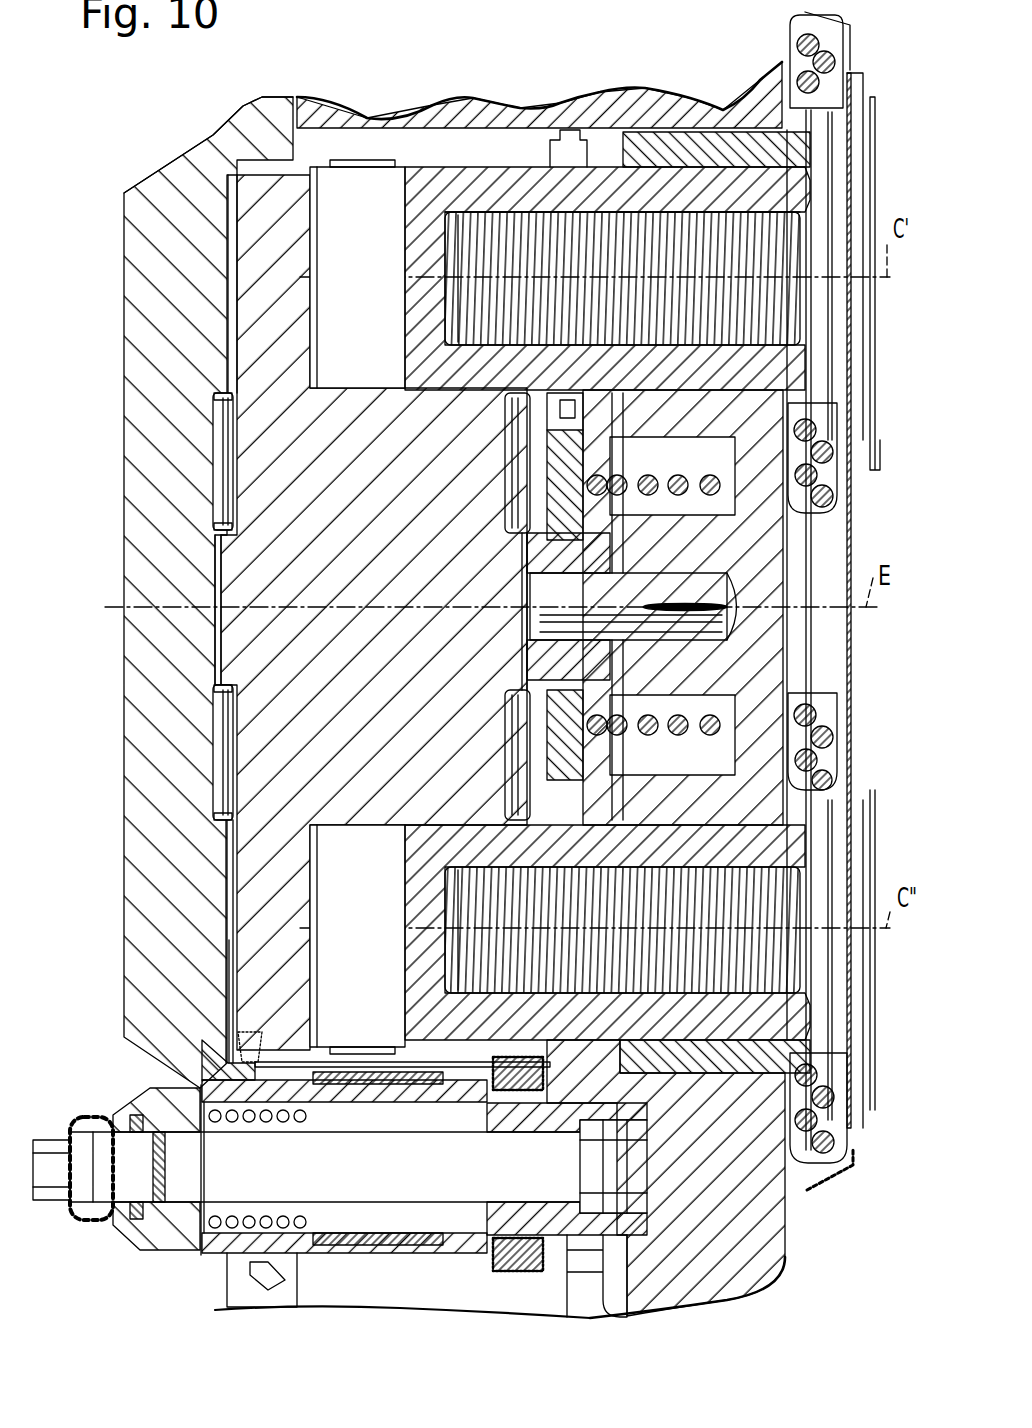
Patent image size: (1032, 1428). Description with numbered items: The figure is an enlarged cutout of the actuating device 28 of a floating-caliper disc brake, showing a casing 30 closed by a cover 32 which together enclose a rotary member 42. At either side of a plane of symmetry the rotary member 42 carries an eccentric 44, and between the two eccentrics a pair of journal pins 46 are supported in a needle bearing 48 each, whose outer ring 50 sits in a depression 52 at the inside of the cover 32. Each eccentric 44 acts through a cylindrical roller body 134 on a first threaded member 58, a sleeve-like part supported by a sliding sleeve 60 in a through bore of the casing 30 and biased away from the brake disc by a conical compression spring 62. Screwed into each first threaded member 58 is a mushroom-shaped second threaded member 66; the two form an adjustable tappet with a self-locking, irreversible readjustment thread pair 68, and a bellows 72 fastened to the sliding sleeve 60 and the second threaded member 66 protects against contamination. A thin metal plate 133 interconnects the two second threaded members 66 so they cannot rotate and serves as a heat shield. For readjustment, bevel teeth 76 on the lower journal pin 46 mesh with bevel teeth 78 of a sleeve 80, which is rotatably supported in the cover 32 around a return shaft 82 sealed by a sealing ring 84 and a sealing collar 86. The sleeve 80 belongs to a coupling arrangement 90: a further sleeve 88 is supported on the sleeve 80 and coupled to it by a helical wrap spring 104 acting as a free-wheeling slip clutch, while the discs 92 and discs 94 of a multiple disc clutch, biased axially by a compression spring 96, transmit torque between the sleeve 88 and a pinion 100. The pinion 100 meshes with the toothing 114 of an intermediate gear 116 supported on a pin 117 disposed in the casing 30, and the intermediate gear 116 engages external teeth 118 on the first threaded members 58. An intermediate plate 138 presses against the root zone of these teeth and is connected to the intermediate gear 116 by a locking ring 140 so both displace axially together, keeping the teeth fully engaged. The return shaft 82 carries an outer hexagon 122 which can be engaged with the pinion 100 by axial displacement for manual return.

The actuating device 28 is at (213, 120).
The casing 30 is at (445, 118).
The cover 32 is at (165, 195).
The rotary member 42 is at (212, 568).
The eccentric 44 is at (270, 175).
The journal pin 46 is at (250, 473).
The needle bearing 48 is at (226, 450).
The outer ring 50 is at (226, 420).
The depression 52 is at (218, 517).
The first threaded member 58 is at (515, 190).
The sliding sleeve 60 is at (720, 160).
The compression spring 62 is at (700, 505).
The second threaded member 66 is at (770, 302).
The readjustment thread pair 68 is at (655, 210).
The bellows 72 is at (795, 50).
The bevel teeth 76 is at (228, 970).
The bevel teeth 78 is at (300, 1047).
The sleeve 80 is at (215, 1078).
The return shaft 82 is at (103, 1190).
The sealing ring 84 is at (155, 1200).
The sealing collar 86 is at (80, 1215).
The sleeve 88 is at (405, 1252).
The coupling arrangement 90 is at (335, 1272).
The discs 92 is at (505, 1272).
The discs 94 is at (515, 1092).
The compression spring 96 is at (213, 1232).
The pinion 100 is at (570, 1232).
The wrap spring 104 is at (375, 1252).
The toothing 114 is at (607, 1262).
The intermediate gear 116 is at (560, 473).
The pin 117 is at (717, 627).
The external teeth 118 is at (558, 418).
The outer hexagon 122 is at (603, 1160).
The metal plate 133 is at (828, 1175).
The roller body 134 is at (355, 190).
The intermediate plate 138 is at (560, 750).
The locking ring 140 is at (630, 675).